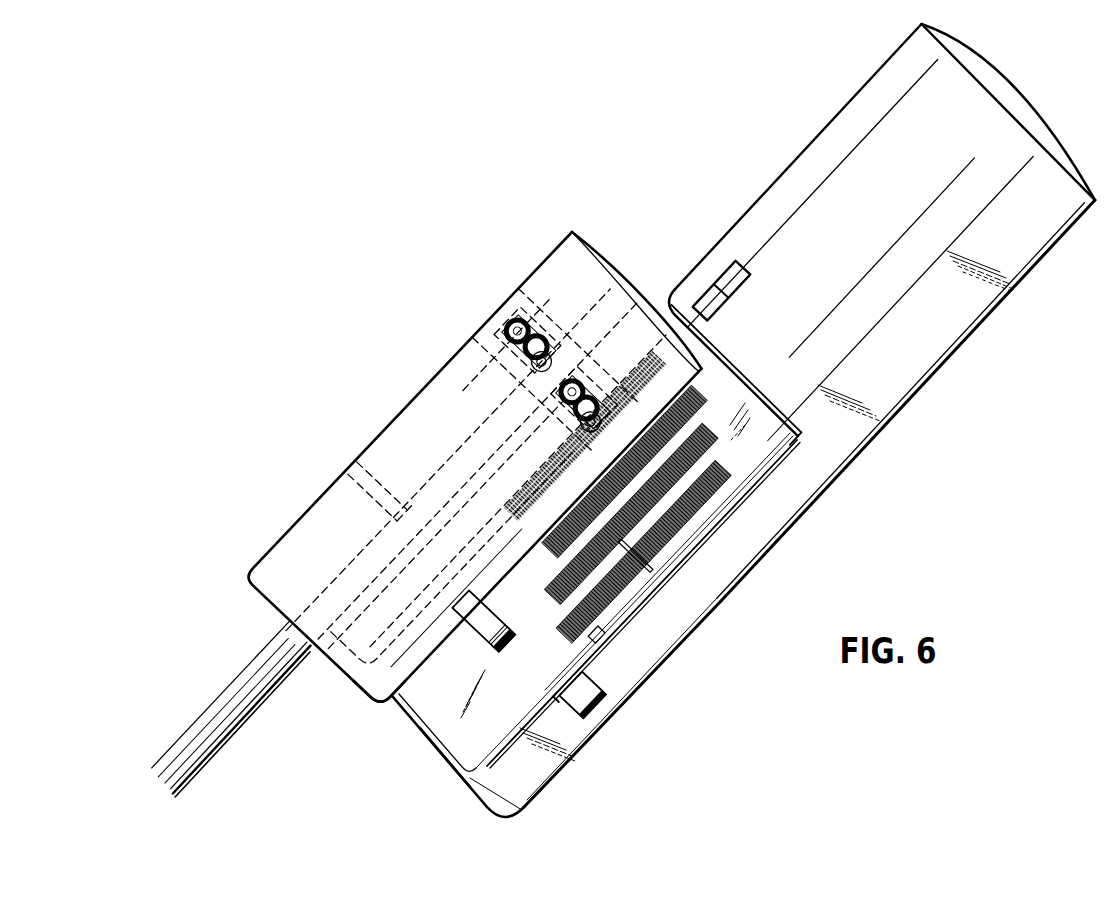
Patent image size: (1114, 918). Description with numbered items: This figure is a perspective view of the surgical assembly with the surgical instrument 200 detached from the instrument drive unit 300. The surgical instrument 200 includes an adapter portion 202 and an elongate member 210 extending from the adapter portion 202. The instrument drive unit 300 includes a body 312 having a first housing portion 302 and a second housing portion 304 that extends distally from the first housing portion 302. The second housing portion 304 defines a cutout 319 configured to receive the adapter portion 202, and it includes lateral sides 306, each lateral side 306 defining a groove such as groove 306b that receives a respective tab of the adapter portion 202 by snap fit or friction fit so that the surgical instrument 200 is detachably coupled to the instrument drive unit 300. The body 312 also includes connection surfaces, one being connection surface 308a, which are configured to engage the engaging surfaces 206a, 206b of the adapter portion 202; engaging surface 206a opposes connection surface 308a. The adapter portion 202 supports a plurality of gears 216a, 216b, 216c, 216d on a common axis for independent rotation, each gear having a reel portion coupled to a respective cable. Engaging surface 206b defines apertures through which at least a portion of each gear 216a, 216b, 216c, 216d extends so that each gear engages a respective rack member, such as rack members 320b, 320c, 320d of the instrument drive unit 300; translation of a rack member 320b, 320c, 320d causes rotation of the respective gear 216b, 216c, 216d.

The surgical instrument 200 is at (262, 634).
The adapter portion 202 is at (353, 572).
The engaging surface 206a is at (587, 247).
The engaging surface 206b is at (373, 708).
The elongate member 210 is at (217, 717).
The gear 216a is at (508, 322).
The gear 216b is at (538, 332).
The gear 216c is at (566, 390).
The gear 216d is at (580, 420).
The instrument drive unit 300 is at (898, 438).
The first housing portion 302 is at (1030, 255).
The second housing portion 304 is at (713, 527).
The lateral side 306 is at (525, 787).
The groove 306b is at (583, 697).
The connection surface 308a is at (460, 763).
The body 312 is at (932, 357).
The cutout 319 is at (762, 443).
The rack member 320b is at (718, 368).
The rack member 320c is at (643, 570).
The rack member 320d is at (597, 630).